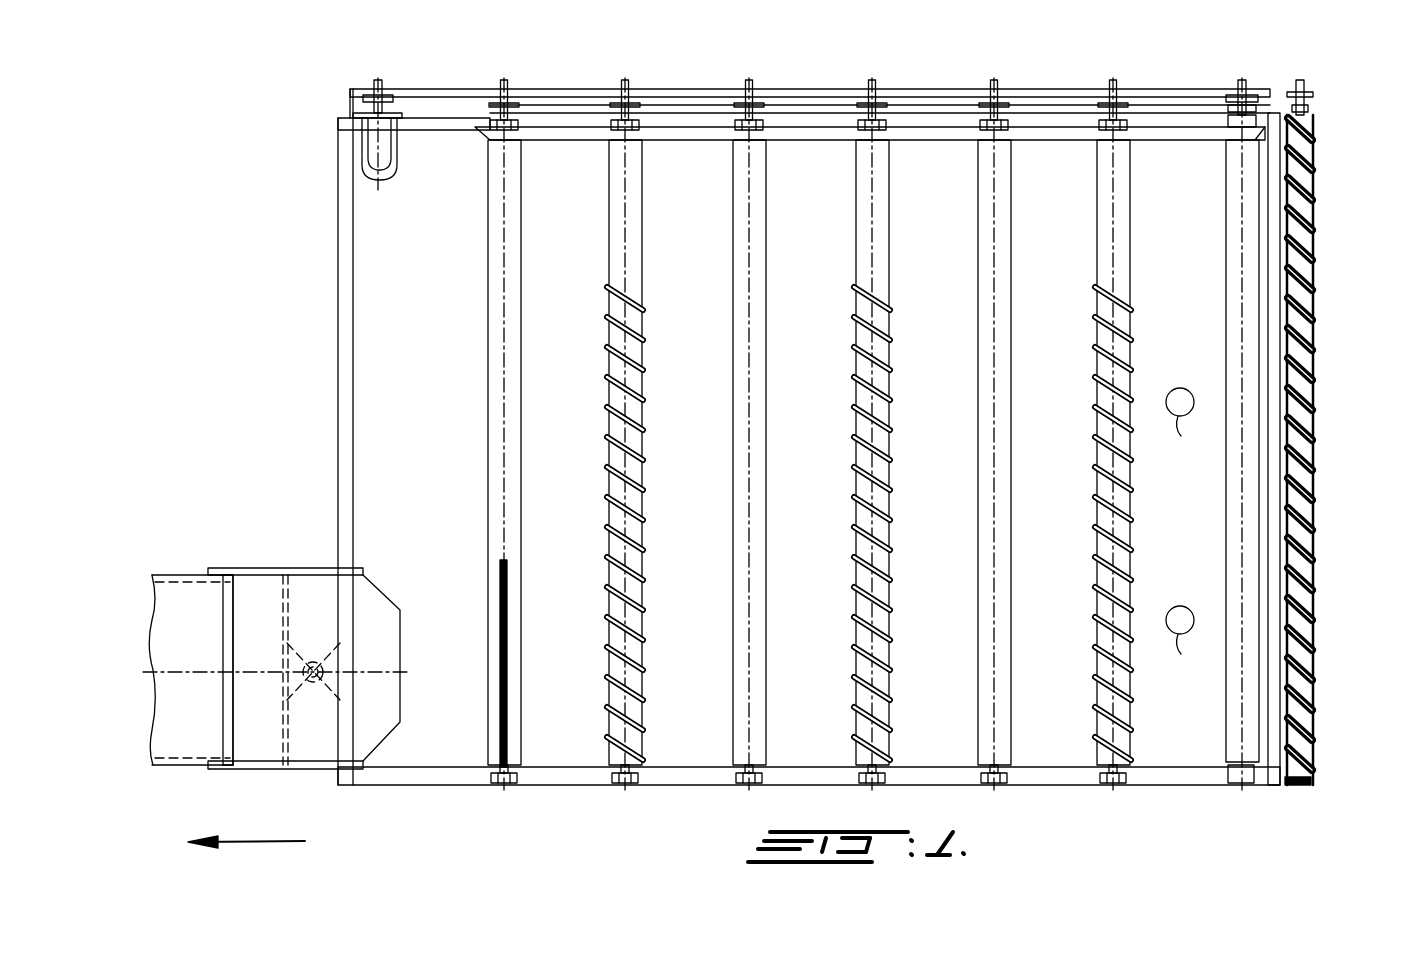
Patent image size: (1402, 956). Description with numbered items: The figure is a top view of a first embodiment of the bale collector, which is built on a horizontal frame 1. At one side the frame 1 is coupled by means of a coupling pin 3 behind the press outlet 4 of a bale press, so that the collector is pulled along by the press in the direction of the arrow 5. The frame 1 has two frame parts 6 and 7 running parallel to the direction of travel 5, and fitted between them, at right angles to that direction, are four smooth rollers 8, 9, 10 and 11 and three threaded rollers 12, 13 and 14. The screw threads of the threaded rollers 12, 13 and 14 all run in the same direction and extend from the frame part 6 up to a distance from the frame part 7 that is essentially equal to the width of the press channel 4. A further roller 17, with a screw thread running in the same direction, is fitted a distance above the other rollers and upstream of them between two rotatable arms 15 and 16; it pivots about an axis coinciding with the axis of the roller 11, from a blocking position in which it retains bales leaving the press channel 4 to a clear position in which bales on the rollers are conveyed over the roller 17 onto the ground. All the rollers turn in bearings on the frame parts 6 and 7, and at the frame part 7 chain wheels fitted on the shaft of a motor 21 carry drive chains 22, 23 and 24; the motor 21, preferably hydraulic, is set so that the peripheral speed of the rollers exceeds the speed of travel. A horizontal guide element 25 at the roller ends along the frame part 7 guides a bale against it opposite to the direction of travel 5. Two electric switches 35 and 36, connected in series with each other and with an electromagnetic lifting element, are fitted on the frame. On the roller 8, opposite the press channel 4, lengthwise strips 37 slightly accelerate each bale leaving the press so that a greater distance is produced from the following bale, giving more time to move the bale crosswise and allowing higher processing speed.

The horizontal frame 1 is at (809, 441).
The coupling pin 3 is at (318, 655).
The press outlet 4 is at (188, 600).
The direction of travel 5 is at (245, 843).
The frame part 6 is at (556, 777).
The frame part 7 is at (440, 127).
The smooth roller 8 is at (512, 412).
The smooth roller 9 is at (760, 378).
The smooth roller 10 is at (1005, 360).
The smooth roller 11 is at (1225, 270).
The threaded roller 12 is at (640, 390).
The threaded roller 13 is at (890, 358).
The threaded roller 14 is at (1135, 355).
The rotatable arm 15 is at (1272, 786).
The rotatable arm 16 is at (1279, 113).
The threaded roller 17 is at (1316, 468).
The motor 21 is at (360, 160).
The drive chain 22 is at (414, 94).
The drive chain 23 is at (683, 104).
The drive chain 24 is at (1262, 93).
The horizontal guide element 25 is at (905, 130).
The electric switch 35 is at (1181, 426).
The electric switch 36 is at (1179, 644).
The strip 37 is at (507, 617).